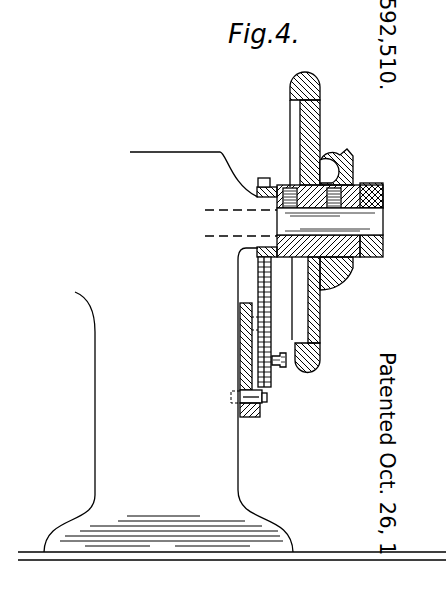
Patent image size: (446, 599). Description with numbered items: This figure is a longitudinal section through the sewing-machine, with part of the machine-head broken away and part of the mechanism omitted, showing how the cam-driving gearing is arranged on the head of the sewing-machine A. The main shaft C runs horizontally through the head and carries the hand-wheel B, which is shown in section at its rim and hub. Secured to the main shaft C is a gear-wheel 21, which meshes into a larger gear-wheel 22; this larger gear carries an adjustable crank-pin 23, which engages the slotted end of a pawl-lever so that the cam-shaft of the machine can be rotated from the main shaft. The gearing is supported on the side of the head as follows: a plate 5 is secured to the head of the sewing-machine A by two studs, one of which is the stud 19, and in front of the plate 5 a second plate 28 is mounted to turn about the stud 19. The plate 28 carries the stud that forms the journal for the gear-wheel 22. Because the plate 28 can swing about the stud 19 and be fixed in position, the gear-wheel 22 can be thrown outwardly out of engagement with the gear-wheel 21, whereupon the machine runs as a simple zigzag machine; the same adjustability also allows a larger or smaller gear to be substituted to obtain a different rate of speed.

The head of the sewing-machine A is at (232, 356).
The hand-wheel B is at (311, 149).
The main shaft C is at (383, 221).
The plate 5 is at (257, 413).
The stud 19 is at (267, 402).
The gear-wheel 21 is at (263, 178).
The gear-wheel 22 is at (258, 284).
The crank-pin 23 is at (286, 367).
The plate 28 is at (240, 342).